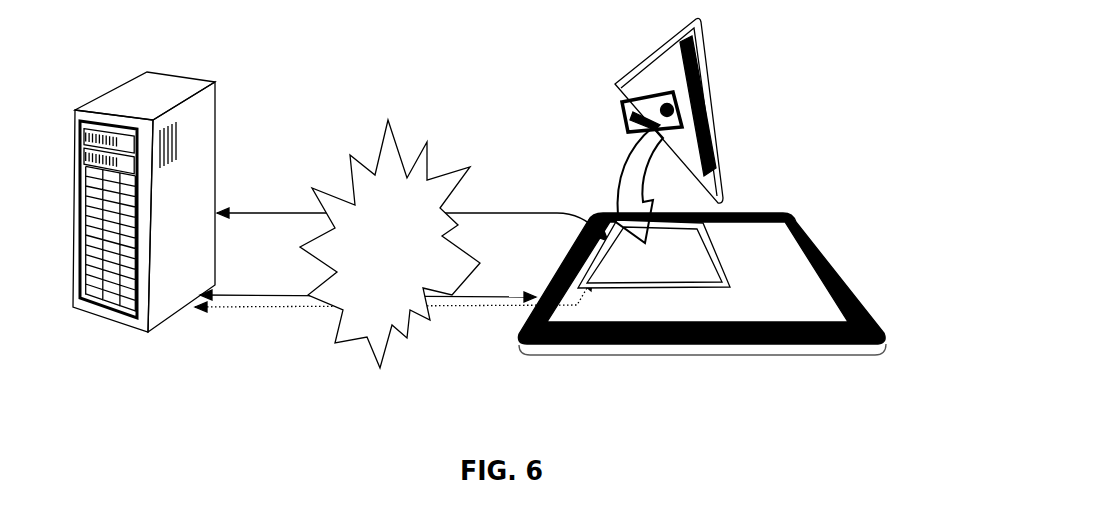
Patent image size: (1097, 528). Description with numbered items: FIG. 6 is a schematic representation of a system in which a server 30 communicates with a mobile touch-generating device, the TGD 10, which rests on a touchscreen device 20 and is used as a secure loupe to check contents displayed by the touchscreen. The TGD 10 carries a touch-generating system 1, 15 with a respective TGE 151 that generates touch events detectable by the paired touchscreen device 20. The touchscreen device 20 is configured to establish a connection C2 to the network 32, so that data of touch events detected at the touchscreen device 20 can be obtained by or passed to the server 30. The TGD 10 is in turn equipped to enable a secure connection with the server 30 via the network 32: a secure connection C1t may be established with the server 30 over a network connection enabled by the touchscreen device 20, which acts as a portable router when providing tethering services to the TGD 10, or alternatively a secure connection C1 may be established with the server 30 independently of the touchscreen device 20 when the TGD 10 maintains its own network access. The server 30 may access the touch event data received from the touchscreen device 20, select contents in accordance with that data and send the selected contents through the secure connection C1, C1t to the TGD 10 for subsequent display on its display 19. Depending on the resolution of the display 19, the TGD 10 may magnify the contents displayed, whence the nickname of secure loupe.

The touch-generating system 1 is at (877, 180).
The TGD 10 is at (713, 253).
The touch-generating system 15 is at (650, 90).
The TGE 151 is at (630, 108).
The display 19 is at (690, 265).
The touchscreen device 20 is at (662, 333).
The server 30 is at (217, 118).
The network 32 is at (400, 252).
The secure connection C1 is at (242, 212).
The connection C2 is at (228, 290).
The secure connection C1t is at (463, 307).